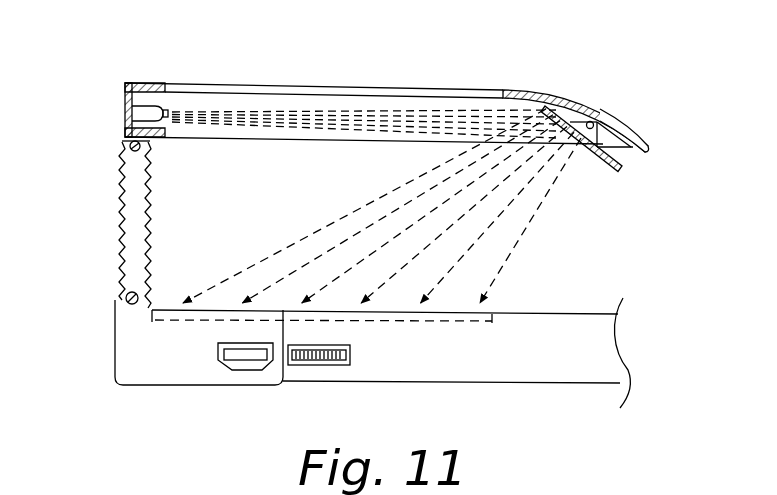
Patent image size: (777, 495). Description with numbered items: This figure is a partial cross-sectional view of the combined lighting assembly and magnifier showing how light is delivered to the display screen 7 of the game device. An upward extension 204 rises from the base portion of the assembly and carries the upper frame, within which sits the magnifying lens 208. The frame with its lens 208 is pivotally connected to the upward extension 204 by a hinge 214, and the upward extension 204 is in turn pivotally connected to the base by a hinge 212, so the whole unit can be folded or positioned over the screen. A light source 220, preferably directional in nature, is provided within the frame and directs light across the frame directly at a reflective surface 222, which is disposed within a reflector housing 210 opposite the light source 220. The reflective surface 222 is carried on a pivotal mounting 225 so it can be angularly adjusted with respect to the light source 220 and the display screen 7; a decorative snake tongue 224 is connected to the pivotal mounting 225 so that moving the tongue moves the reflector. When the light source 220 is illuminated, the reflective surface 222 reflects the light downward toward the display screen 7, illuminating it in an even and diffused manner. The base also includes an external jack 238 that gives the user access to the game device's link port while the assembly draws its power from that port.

The display screen 7 is at (401, 320).
The upward extension 204 is at (122, 196).
The magnifying lens 208 is at (426, 90).
The reflector housing 210 is at (554, 92).
The hinge 212 is at (124, 296).
The hinge 214 is at (126, 142).
The light source 220 is at (125, 101).
The reflective surface 222 is at (604, 168).
The snake tongue 224 is at (658, 177).
The pivotal mounting 225 is at (600, 116).
The external jack 238 is at (238, 368).